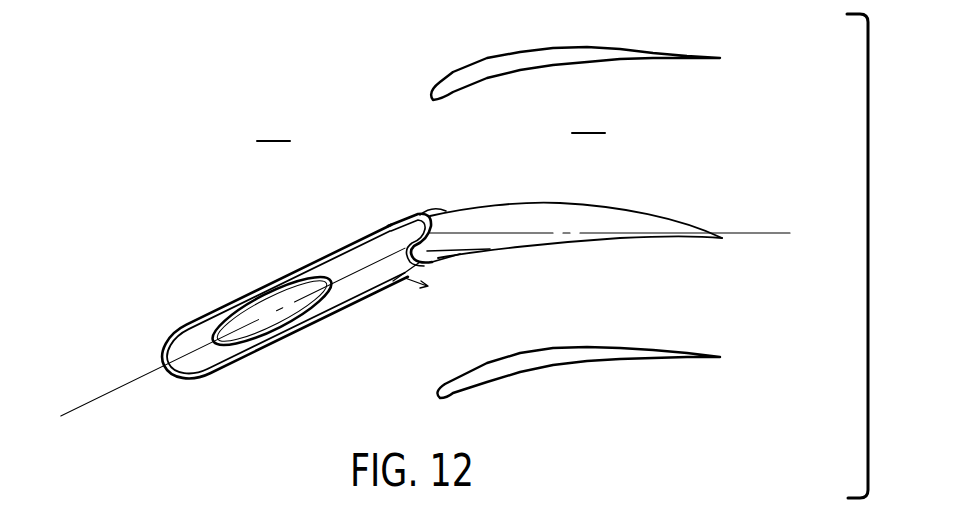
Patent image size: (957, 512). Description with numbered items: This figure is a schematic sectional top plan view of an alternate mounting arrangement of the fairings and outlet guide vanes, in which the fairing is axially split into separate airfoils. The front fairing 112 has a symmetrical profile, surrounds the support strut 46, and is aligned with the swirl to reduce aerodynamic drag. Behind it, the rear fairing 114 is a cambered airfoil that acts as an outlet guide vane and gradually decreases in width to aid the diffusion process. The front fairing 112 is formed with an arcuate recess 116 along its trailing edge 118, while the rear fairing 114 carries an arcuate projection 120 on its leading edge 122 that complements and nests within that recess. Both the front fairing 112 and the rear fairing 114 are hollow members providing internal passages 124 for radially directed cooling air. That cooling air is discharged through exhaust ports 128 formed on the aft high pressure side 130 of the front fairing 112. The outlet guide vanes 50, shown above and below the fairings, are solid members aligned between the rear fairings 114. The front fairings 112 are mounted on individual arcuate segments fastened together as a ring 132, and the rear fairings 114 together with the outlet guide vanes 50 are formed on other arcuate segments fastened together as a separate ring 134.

The support strut 46 is at (231, 308).
The outlet guide vanes 50 is at (707, 53).
The front fairing 112 is at (163, 352).
The rear fairing 114 is at (553, 208).
The arcuate recess 116 is at (392, 226).
The trailing edge 118 is at (435, 260).
The arcuate projection 120 is at (440, 215).
The leading edge 122 is at (488, 252).
The internal passages 124 is at (340, 260).
The exhaust ports 128 is at (402, 272).
The aft high pressure side 130 is at (318, 343).
The ring 132 is at (276, 124).
The separate ring 134 is at (590, 116).